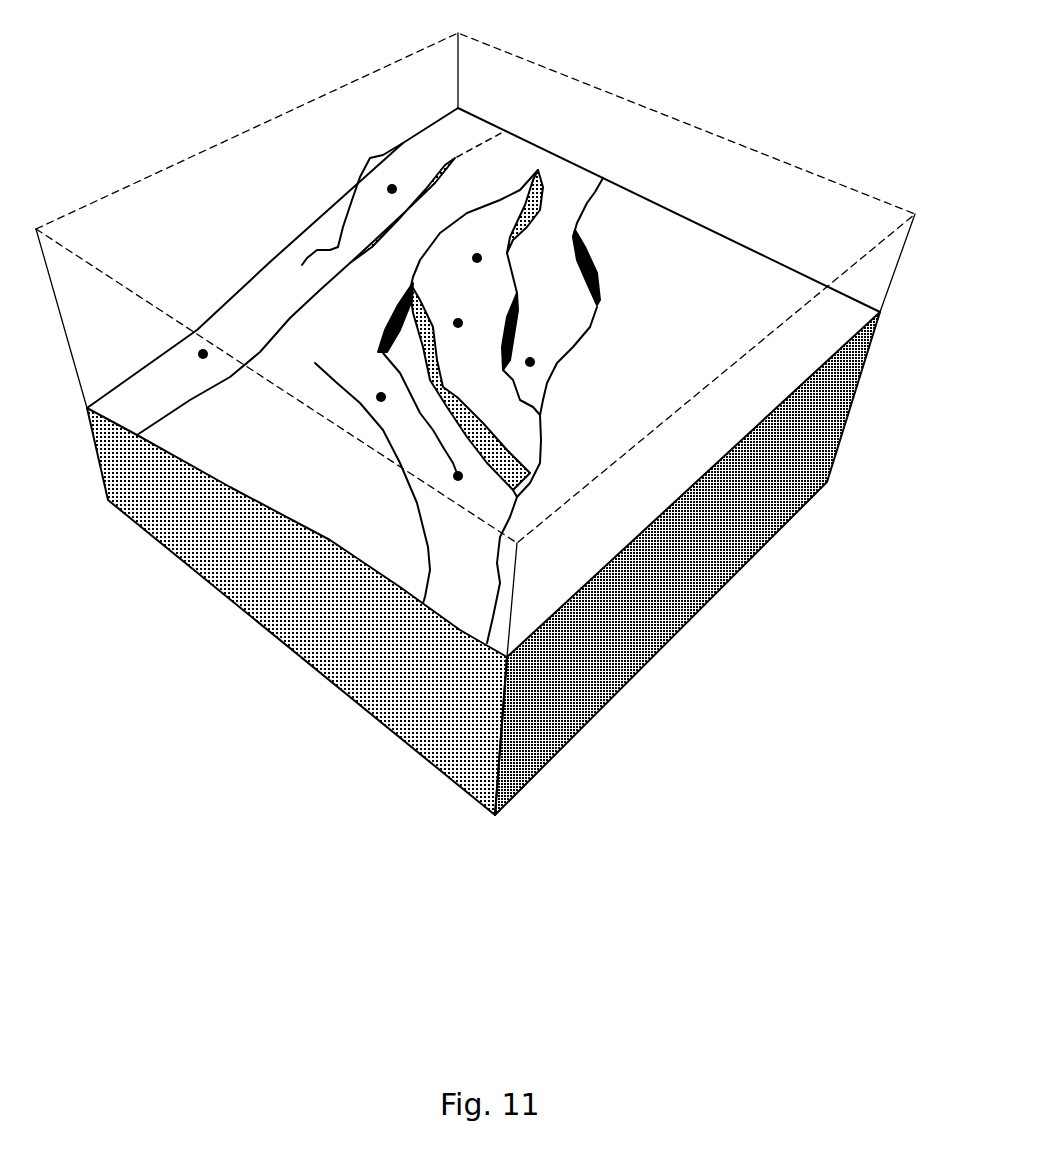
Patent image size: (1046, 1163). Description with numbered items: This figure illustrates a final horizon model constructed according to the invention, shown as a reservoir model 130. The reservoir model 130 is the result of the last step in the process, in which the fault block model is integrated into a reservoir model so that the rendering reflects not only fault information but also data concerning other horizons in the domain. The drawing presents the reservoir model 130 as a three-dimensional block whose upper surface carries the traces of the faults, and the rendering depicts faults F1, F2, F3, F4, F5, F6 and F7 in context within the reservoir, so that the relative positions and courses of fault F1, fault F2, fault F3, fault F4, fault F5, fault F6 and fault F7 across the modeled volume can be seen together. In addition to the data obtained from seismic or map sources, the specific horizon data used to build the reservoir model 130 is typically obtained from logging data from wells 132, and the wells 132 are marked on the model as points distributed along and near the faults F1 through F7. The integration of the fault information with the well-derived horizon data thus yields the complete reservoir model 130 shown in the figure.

The reservoir model 130 is at (652, 80).
The wells 132 is at (208, 355).
The fault F1 is at (590, 333).
The fault F2 is at (530, 237).
The fault F3 is at (482, 200).
The fault F4 is at (390, 328).
The fault F5 is at (377, 433).
The fault F6 is at (285, 327).
The fault F7 is at (378, 147).